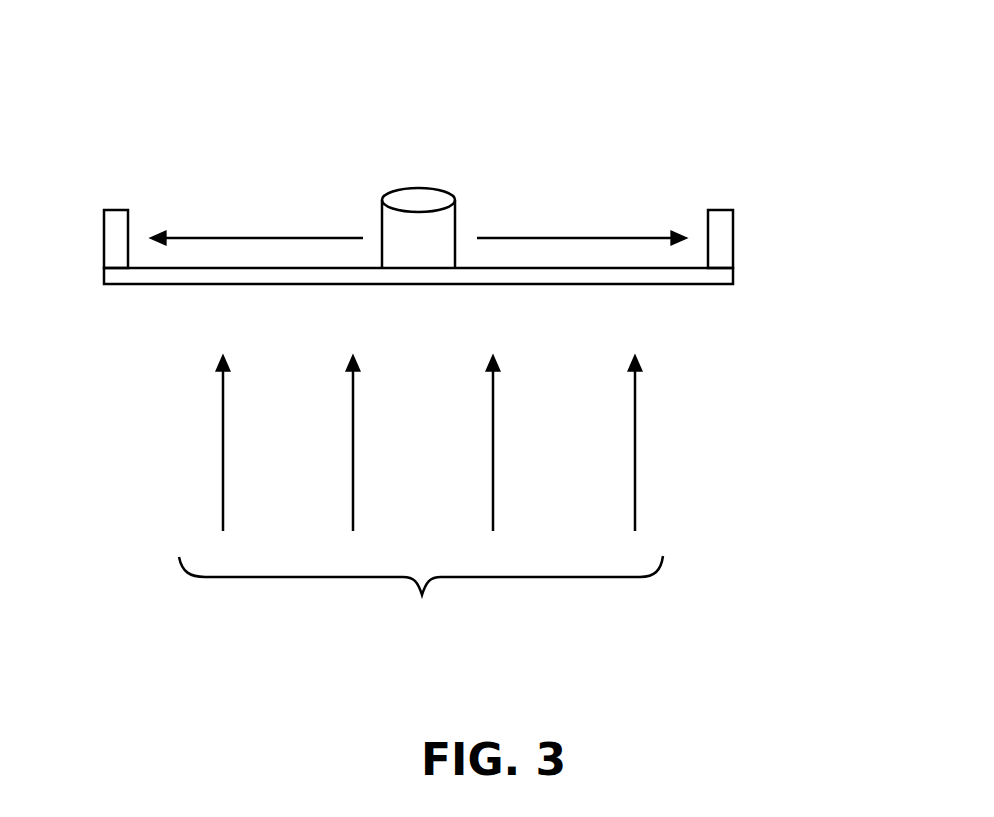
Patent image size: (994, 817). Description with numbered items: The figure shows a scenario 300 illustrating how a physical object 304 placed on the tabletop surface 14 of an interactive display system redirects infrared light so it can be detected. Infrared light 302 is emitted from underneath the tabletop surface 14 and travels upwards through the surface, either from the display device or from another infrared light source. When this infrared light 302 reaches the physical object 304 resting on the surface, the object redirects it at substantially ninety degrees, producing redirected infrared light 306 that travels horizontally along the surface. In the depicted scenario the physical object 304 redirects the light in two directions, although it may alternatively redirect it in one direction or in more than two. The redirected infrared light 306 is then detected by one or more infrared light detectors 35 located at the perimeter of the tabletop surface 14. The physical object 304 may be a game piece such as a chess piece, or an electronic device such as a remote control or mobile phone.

The scenario 300 is at (864, 130).
The tabletop surface 14 is at (727, 276).
The infrared light detectors 35 is at (112, 240).
The physical object 304 is at (425, 197).
The redirected infrared light 306 is at (248, 237).
The infrared light 302 is at (421, 493).